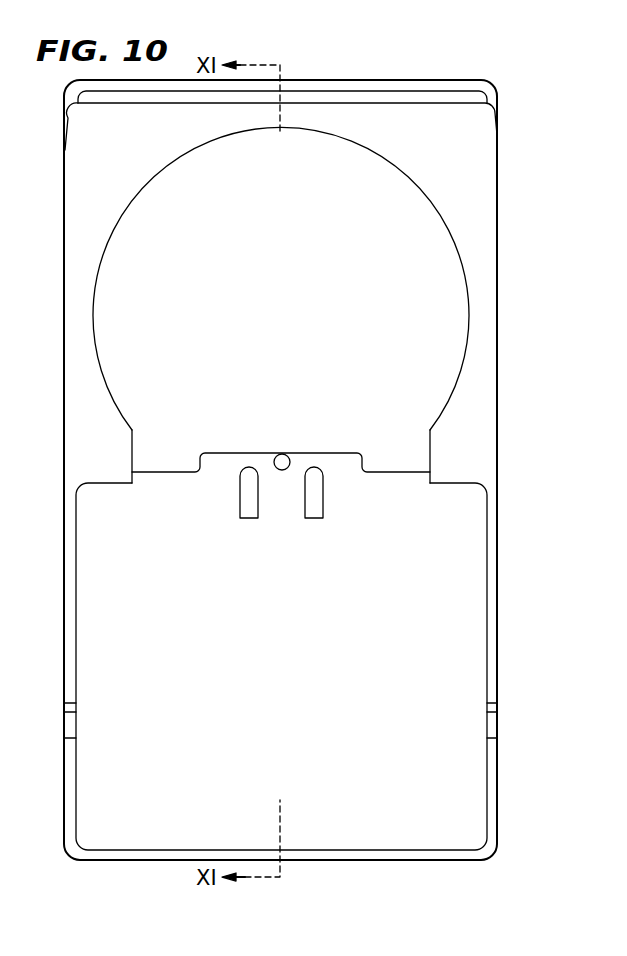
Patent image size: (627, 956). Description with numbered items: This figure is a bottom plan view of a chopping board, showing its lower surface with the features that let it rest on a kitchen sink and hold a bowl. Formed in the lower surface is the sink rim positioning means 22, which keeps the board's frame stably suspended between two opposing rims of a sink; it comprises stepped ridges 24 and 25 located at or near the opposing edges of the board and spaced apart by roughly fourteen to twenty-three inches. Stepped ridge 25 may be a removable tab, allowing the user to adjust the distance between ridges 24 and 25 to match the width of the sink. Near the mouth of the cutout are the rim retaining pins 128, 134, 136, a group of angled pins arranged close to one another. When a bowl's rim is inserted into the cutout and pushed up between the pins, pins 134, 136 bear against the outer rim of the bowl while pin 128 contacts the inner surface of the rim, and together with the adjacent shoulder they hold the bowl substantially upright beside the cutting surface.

The sink rim positioning means 22 is at (393, 77).
The stepped ridge 24 is at (452, 103).
The stepped ridge 25 is at (490, 721).
The rim retaining pin 128 is at (281, 454).
The rim retaining pin 134 is at (249, 498).
The rim retaining pin 136 is at (313, 500).